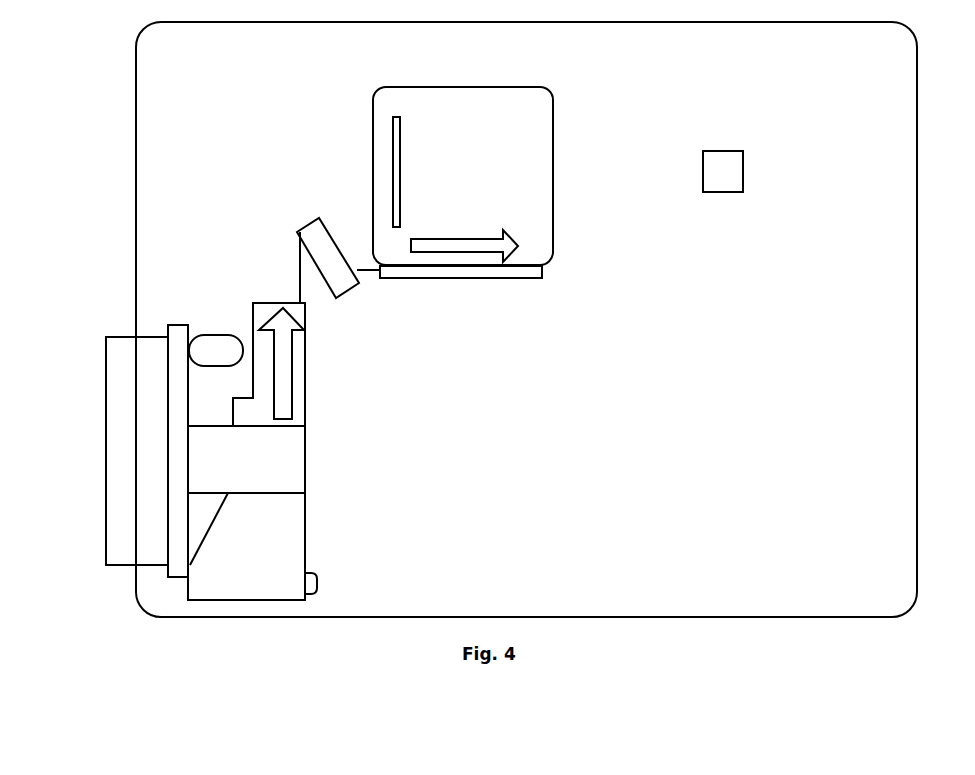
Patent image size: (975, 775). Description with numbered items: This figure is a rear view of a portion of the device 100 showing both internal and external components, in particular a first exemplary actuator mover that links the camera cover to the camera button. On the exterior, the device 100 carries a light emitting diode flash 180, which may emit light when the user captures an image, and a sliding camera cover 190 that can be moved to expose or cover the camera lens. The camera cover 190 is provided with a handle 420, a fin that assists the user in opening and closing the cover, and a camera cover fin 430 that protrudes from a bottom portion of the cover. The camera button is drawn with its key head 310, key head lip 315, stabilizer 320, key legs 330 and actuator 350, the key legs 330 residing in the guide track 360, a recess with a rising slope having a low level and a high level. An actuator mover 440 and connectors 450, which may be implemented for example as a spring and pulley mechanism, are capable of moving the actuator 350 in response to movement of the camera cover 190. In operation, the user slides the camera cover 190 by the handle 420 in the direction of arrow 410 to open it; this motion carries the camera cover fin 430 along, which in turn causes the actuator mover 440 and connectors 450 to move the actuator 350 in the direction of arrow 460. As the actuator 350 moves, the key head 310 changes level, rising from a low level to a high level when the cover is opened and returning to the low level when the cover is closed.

The device 100 is at (140, 26).
The light emitting diode (LED) flash 180 is at (745, 172).
The camera cover 190 is at (461, 87).
The key head 310 is at (106, 402).
The key head lip 315 is at (178, 325).
The stabilizer 320 is at (208, 335).
The key legs 330 is at (287, 452).
The actuator 350 is at (306, 350).
The guide track 360 is at (318, 587).
The arrow 410 is at (503, 232).
The handle 420 is at (401, 172).
The camera cover fin 430 is at (545, 279).
The actuator mover 440 is at (300, 232).
The connectors 450 is at (300, 273).
The arrow 460 is at (290, 383).